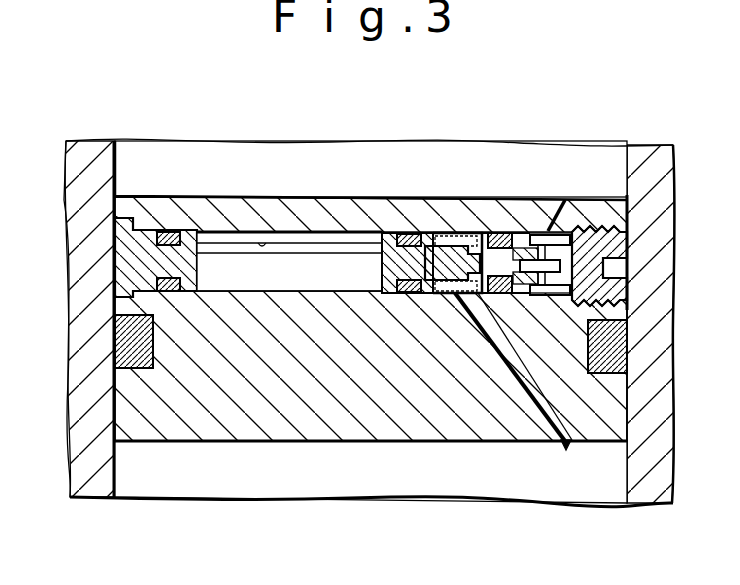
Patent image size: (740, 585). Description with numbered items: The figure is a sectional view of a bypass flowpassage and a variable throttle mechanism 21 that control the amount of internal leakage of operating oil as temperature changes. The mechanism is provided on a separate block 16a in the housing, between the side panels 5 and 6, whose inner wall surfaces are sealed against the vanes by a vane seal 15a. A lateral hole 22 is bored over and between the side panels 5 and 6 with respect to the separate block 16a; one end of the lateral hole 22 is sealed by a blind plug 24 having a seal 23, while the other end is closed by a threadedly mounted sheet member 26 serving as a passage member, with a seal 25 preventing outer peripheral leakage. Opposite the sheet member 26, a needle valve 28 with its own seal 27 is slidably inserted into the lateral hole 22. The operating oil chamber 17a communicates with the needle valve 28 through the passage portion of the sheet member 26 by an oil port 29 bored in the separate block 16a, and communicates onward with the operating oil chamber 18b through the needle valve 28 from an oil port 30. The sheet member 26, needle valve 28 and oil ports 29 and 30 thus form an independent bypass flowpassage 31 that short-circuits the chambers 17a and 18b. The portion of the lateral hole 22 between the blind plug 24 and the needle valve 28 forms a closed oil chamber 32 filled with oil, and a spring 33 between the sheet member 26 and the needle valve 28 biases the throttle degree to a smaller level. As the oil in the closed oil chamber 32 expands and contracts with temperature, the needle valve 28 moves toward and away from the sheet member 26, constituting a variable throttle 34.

The side panel 5 is at (84, 431).
The side panel 6 is at (655, 463).
The vane seal 15a is at (130, 339).
The separate block 16a is at (245, 443).
The operating oil chamber 17a is at (319, 190).
The operating oil chamber 18b is at (362, 488).
The variable throttle mechanism 21 is at (517, 231).
The lateral hole 22 is at (262, 228).
The seal 23 is at (168, 231).
The blind plug 24 is at (113, 257).
The seal 25 is at (500, 229).
The sheet member 26 is at (590, 215).
The seal 27 is at (411, 293).
The needle valve 28 is at (370, 266).
The oil port 29 is at (549, 212).
The oil port 30 is at (522, 390).
The bypass flowpassage 31 is at (566, 450).
The closed oil chamber 32 is at (241, 274).
The spring 33 is at (447, 295).
The variable throttle 34 is at (490, 300).